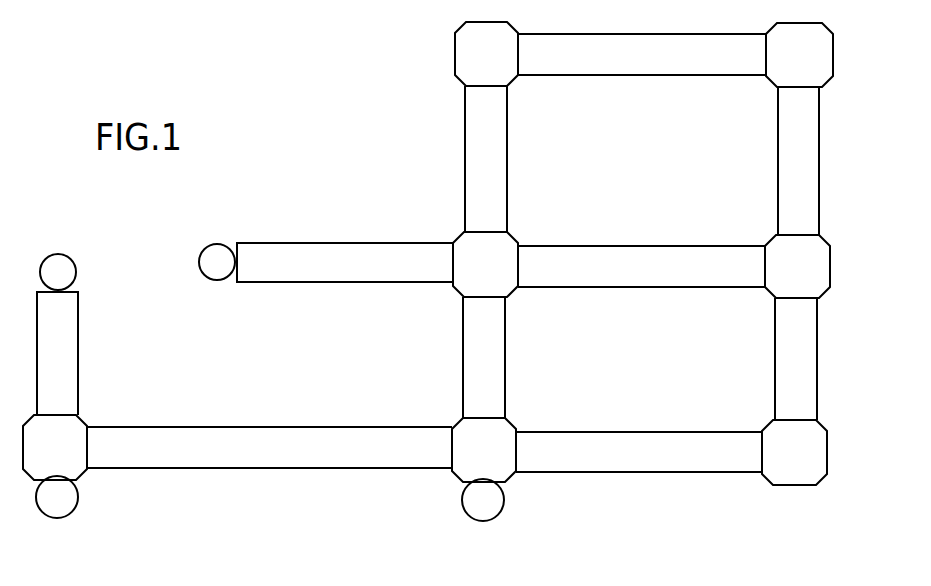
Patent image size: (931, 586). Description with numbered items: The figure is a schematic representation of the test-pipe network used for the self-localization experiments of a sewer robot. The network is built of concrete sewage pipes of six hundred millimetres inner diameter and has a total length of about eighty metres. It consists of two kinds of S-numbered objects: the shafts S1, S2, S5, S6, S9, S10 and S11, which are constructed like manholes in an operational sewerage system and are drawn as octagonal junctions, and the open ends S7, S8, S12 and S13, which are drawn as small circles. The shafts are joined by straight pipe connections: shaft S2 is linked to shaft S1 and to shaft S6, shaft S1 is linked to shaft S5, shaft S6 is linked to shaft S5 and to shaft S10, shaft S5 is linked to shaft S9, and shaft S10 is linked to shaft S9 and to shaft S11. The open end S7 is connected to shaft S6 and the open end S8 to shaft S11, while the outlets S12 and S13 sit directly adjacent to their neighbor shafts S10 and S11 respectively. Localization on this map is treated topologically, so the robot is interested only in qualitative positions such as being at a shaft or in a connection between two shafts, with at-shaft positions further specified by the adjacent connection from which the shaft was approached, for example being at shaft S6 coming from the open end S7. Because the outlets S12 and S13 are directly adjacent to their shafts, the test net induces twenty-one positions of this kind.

The shaft S1 is at (799, 55).
The shaft S2 is at (486, 54).
The shaft S5 is at (797, 266).
The shaft S6 is at (485, 264).
The open end S7 is at (217, 262).
The open end S8 is at (58, 272).
The shaft S9 is at (794, 452).
The shaft S10 is at (484, 450).
The shaft S11 is at (55, 447).
The open end S12 is at (483, 500).
The open end S13 is at (57, 497).